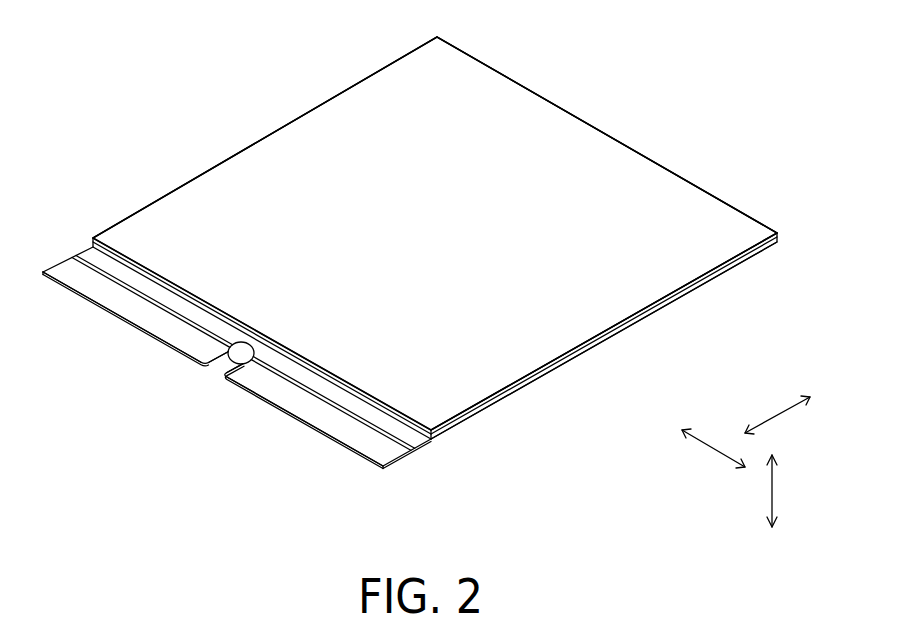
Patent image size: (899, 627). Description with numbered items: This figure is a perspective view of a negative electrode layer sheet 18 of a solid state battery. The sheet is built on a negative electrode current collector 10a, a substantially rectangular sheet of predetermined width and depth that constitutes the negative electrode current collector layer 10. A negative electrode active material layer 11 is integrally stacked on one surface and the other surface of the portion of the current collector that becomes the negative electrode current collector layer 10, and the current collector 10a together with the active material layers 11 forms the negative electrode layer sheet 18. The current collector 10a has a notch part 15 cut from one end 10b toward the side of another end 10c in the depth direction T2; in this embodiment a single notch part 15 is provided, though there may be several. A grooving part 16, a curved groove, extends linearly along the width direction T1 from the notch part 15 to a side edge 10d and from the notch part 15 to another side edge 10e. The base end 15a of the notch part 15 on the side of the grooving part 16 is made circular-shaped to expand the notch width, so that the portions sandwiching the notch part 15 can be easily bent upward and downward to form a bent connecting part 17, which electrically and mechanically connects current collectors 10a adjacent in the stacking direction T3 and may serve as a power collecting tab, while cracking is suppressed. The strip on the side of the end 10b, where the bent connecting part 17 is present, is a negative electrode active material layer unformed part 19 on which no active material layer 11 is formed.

The negative electrode current collector layer 10 is at (435, 393).
The negative electrode current collector 10a is at (402, 470).
The one end 10b is at (332, 438).
The another end 10c is at (638, 152).
The side edge 10d is at (532, 388).
The another side edge 10e is at (247, 147).
The negative electrode active material layer 11 is at (527, 110).
The notch part 15 is at (203, 377).
The base end 15a is at (250, 343).
The grooving part 16 is at (140, 298).
The bent connecting part 17 is at (95, 288).
The negative electrode layer sheet 18 is at (634, 78).
The negative electrode active material layer unformed part 19 is at (60, 244).
The width direction T1 is at (713, 455).
The depth direction T2 is at (779, 420).
The stacking direction T3 is at (788, 491).